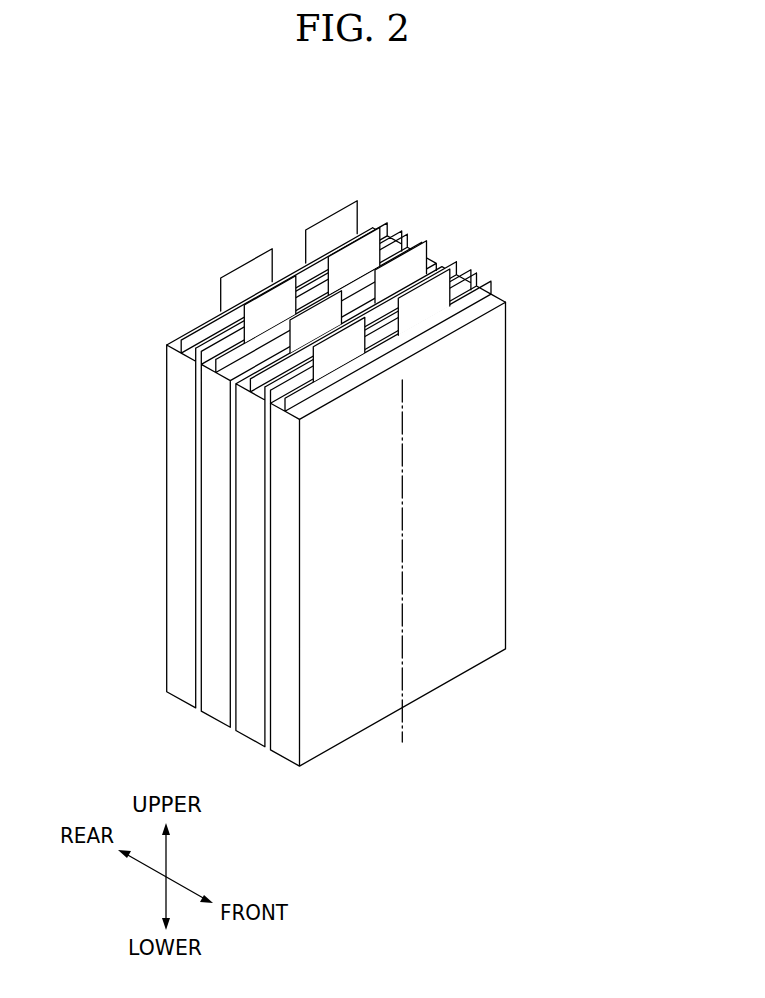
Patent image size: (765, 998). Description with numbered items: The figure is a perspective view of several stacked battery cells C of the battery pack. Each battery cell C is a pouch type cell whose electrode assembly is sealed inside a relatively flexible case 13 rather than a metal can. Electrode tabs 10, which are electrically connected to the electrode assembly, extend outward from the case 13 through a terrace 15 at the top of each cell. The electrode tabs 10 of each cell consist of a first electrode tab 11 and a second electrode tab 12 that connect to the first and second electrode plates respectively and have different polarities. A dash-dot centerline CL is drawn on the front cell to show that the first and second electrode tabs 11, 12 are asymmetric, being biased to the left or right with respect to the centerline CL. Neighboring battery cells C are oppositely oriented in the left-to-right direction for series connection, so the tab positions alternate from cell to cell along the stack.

The electrode tabs 10 is at (351, 482).
The first electrode tab 11 is at (247, 268).
The second electrode tab 12 is at (197, 192).
The case 13 is at (287, 749).
The terrace 15 is at (493, 303).
The battery cell C is at (537, 465).
The centerline CL is at (402, 577).